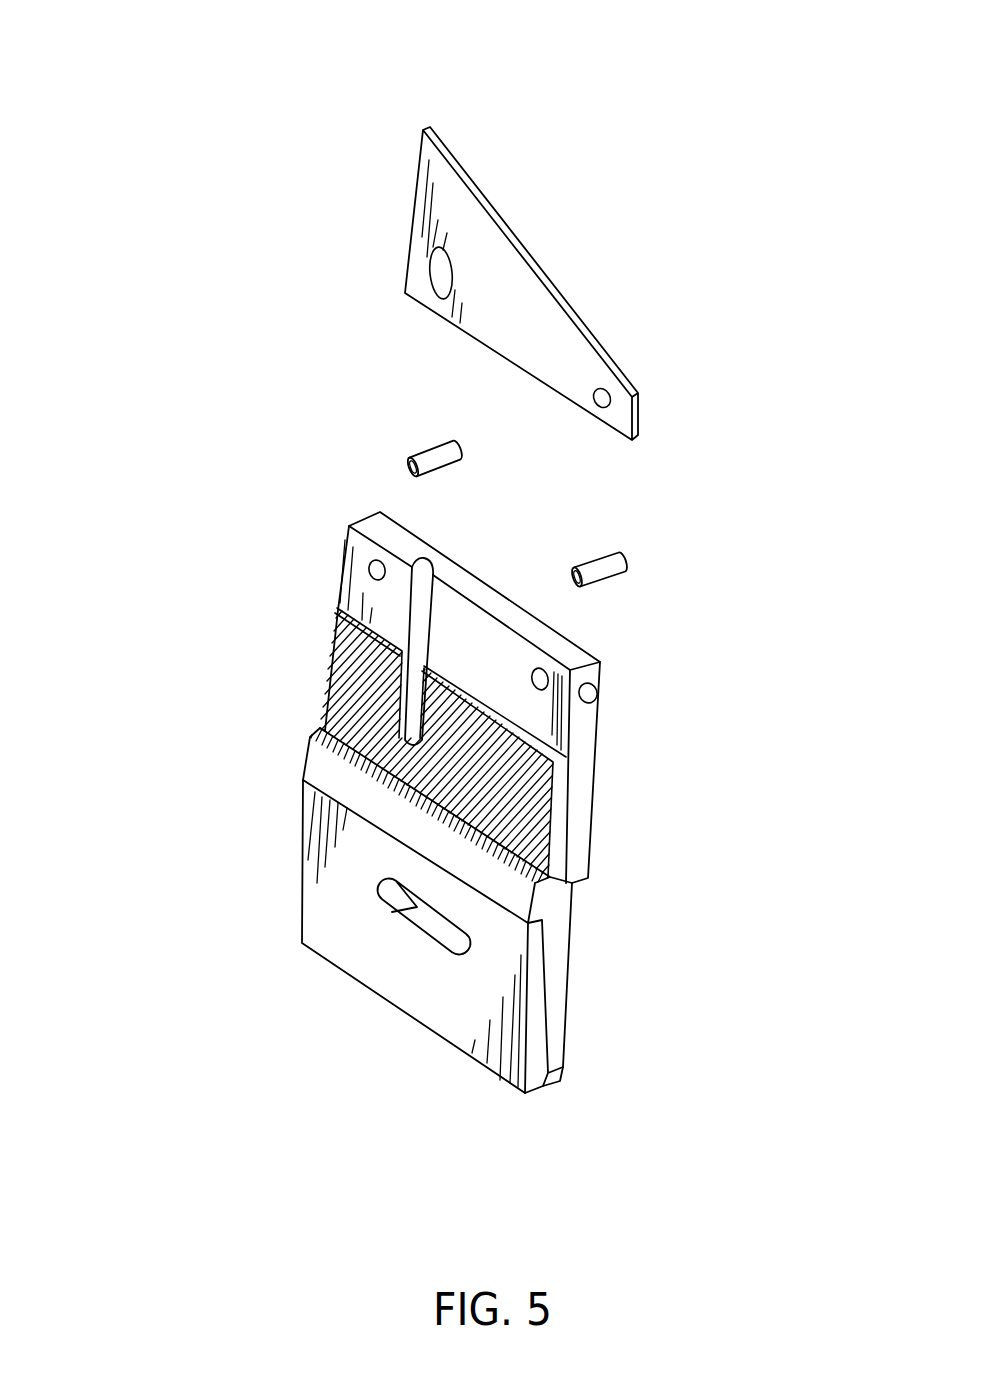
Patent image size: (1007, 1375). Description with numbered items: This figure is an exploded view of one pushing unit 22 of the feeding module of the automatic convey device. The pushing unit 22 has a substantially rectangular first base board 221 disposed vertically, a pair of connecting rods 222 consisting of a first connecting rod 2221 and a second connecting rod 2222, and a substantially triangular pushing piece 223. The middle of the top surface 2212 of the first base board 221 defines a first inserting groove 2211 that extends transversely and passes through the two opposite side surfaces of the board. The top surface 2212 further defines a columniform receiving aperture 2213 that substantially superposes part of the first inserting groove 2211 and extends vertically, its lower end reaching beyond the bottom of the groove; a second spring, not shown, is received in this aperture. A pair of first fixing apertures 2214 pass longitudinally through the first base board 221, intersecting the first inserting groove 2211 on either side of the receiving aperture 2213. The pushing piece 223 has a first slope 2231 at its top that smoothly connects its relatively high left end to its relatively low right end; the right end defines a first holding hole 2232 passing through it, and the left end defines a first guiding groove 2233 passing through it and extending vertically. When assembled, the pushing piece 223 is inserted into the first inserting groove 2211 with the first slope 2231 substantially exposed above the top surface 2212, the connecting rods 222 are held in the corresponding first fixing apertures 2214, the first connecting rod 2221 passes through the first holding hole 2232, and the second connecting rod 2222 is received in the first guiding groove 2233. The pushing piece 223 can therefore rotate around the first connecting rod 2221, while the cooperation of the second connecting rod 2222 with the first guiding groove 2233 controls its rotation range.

The pushing unit 22 is at (170, 33).
The first base board 221 is at (626, 896).
The first inserting groove 2211 is at (567, 737).
The top surface 2212 is at (398, 530).
The receiving aperture 2213 is at (403, 707).
The first fixing apertures 2214 is at (370, 570).
The connecting rods 222 is at (398, 398).
The first connecting rod 2221 is at (608, 566).
The second connecting rod 2222 is at (420, 455).
The pushing piece 223 is at (680, 352).
The first slope 2231 is at (523, 246).
The first holding hole 2232 is at (600, 405).
The first guiding groove 2233 is at (440, 272).